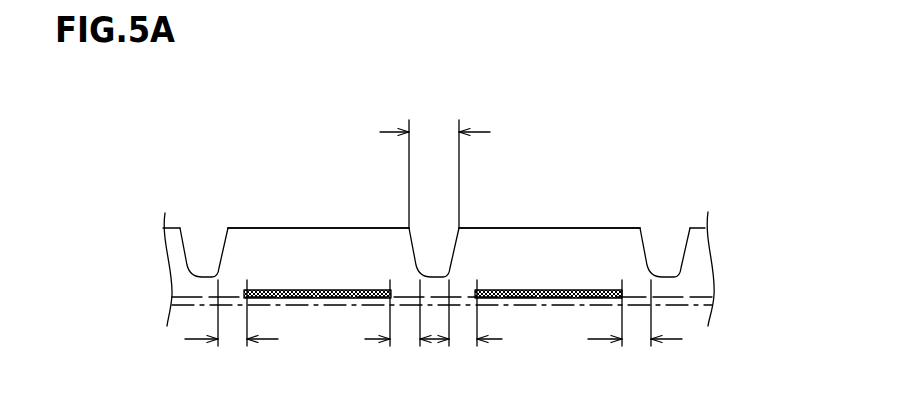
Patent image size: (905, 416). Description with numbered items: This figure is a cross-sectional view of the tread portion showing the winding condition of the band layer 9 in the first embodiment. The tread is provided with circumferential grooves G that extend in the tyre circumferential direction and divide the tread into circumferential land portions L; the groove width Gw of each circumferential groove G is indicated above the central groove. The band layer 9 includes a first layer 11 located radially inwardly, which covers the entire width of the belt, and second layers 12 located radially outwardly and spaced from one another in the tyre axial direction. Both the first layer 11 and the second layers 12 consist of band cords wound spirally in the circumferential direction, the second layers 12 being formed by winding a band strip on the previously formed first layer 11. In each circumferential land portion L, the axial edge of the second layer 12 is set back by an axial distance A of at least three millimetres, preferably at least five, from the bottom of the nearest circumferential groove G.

The band layer 9 is at (690, 272).
The first layer 11 is at (683, 305).
The second layer 12 is at (346, 228).
The circumferential groove G is at (202, 250).
The circumferential land portion L is at (297, 228).
The groove width Gw is at (435, 165).
The axial distance A is at (433, 325).